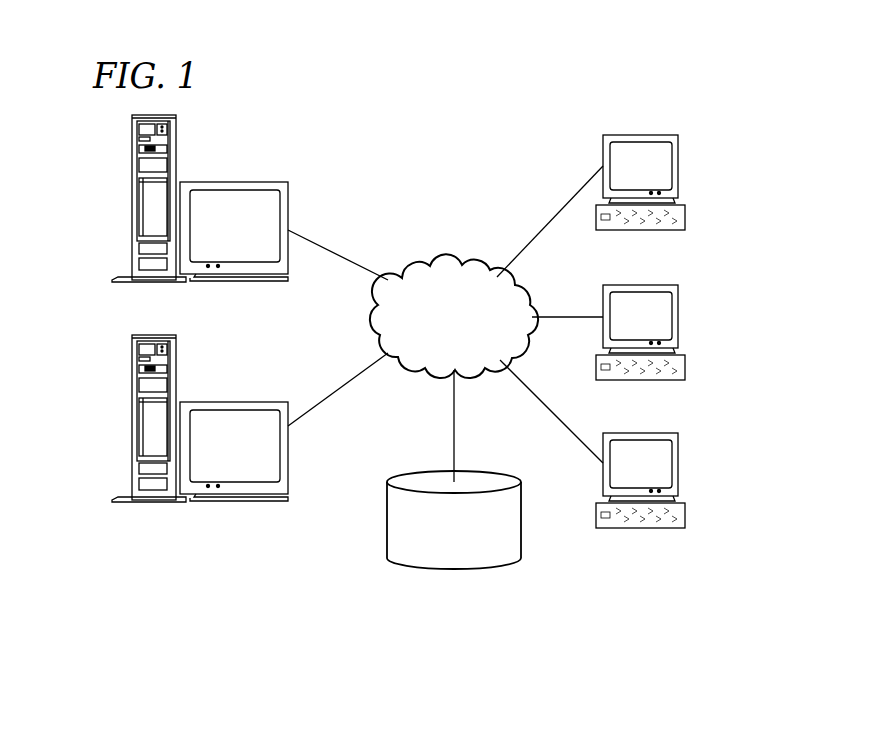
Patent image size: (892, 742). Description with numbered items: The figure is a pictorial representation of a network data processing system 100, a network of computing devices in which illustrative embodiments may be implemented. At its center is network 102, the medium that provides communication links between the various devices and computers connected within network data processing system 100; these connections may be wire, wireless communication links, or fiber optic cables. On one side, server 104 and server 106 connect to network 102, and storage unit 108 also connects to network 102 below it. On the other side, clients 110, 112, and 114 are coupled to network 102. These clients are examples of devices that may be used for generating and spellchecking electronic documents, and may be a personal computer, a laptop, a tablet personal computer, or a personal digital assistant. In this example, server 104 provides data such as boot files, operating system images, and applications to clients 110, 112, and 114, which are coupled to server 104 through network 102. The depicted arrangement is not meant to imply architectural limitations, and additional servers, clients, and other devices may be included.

The network data processing system 100 is at (508, 142).
The network 102 is at (424, 266).
The server 104 is at (132, 199).
The server 106 is at (132, 419).
The storage unit 108 is at (437, 570).
The client 110 is at (678, 168).
The client 112 is at (678, 318).
The client 114 is at (678, 465).